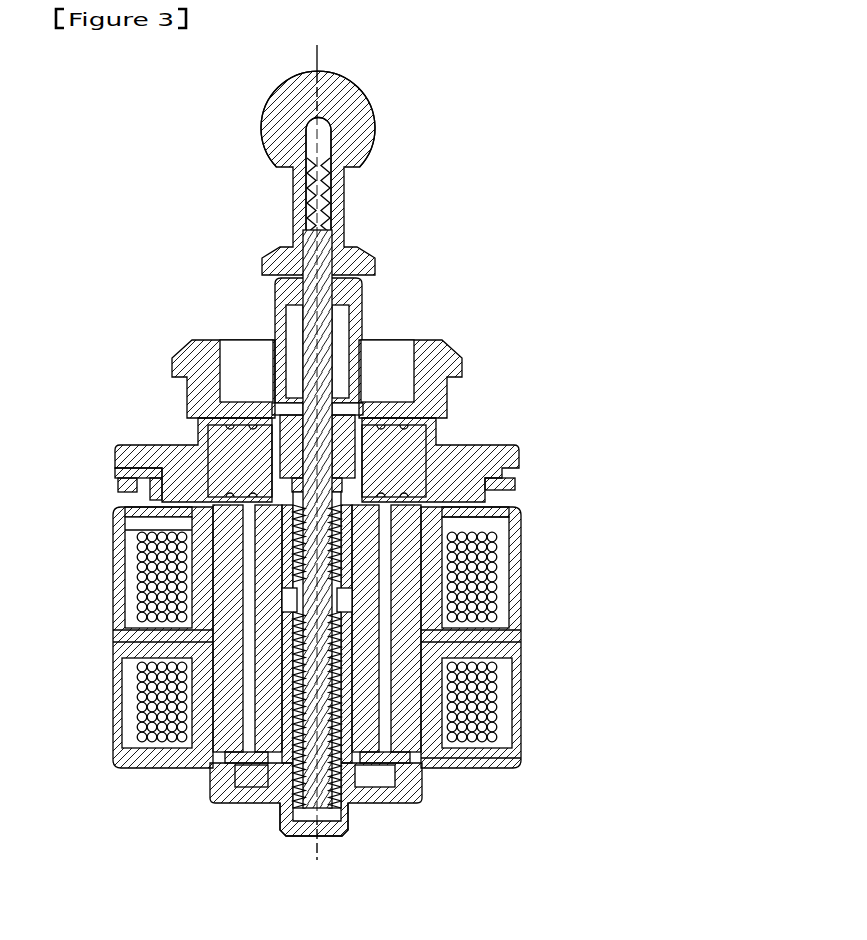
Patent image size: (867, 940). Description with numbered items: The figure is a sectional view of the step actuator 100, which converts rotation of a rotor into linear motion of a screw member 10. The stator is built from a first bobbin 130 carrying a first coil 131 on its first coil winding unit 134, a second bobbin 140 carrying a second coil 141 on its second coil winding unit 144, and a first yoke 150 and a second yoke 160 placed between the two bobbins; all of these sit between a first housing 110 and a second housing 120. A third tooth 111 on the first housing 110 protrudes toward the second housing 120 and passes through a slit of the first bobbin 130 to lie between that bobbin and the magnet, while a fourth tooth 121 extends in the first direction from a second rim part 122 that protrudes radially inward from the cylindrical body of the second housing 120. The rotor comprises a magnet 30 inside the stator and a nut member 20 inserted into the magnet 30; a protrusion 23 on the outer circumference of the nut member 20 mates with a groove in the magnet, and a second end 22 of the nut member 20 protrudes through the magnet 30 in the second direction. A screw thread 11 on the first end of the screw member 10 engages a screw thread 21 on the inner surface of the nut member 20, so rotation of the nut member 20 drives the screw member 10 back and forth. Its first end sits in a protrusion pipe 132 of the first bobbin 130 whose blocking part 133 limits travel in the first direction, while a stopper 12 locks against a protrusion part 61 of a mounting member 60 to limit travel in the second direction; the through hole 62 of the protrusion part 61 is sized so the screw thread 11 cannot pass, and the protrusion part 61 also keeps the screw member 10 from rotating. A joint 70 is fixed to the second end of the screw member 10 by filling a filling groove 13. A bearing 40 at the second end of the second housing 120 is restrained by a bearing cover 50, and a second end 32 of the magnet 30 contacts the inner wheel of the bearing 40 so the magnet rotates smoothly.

The step actuator 100 is at (113, 77).
The joint 70 is at (270, 124).
The filling groove 13 is at (340, 181).
The screw member 10 is at (332, 262).
The protrusion part 61 is at (350, 292).
The through hole 62 is at (285, 292).
The mounting member 60 is at (428, 350).
The bearing 40 is at (185, 455).
The stopper 12 is at (235, 440).
The second end of the magnet 32 is at (128, 484).
The bearing cover 50 is at (455, 455).
The second end of the nut member 22 is at (400, 440).
The screw thread of the nut member 21 is at (495, 490).
The first housing 110 is at (115, 720).
The second rim part 122 is at (130, 520).
The second housing 120 is at (185, 560).
The second bobbin 140 is at (150, 575).
The second coil 141 is at (160, 545).
The second yoke 160 is at (120, 635).
The first yoke 150 is at (125, 648).
The first bobbin 130 is at (160, 690).
The first coil 131 is at (175, 735).
The protrusion 23 is at (497, 725).
The fourth tooth 121 is at (497, 555).
The second coil winding unit 144 is at (497, 597).
The first coil winding unit 134 is at (497, 670).
The third tooth 111 is at (497, 748).
The nut member 20 is at (495, 537).
The magnet 30 is at (497, 577).
The screw thread 11 is at (340, 790).
The blocking part 133 is at (325, 812).
The protrusion pipe 132 is at (375, 768).